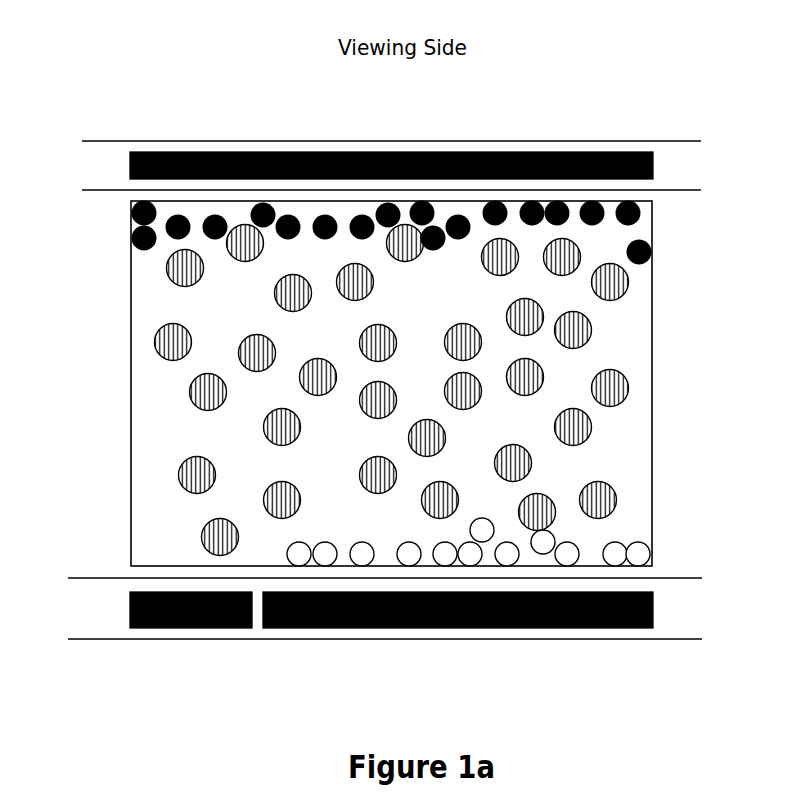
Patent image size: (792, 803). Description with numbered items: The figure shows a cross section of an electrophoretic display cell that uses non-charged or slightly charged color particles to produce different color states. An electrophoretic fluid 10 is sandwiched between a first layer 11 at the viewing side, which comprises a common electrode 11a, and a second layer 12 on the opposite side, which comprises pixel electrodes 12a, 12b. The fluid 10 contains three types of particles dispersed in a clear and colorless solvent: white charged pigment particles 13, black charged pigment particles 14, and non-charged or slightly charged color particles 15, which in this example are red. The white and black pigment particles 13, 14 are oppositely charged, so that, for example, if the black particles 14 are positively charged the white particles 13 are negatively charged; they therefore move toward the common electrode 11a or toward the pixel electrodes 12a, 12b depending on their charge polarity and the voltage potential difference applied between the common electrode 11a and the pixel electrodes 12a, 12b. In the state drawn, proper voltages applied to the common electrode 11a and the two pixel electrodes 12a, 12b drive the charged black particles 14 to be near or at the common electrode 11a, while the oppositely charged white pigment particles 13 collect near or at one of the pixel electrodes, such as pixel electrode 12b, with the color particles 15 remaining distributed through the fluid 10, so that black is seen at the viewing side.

The electrophoretic fluid 10 is at (653, 384).
The first layer 11 is at (118, 163).
The common electrode 11a is at (178, 163).
The second layer 12 is at (676, 616).
The pixel electrode 12a is at (178, 617).
The pixel electrode 12b is at (433, 617).
The white charged pigment particles 13 is at (649, 554).
The black charged pigment particles 14 is at (555, 204).
The color particles 15 is at (163, 348).